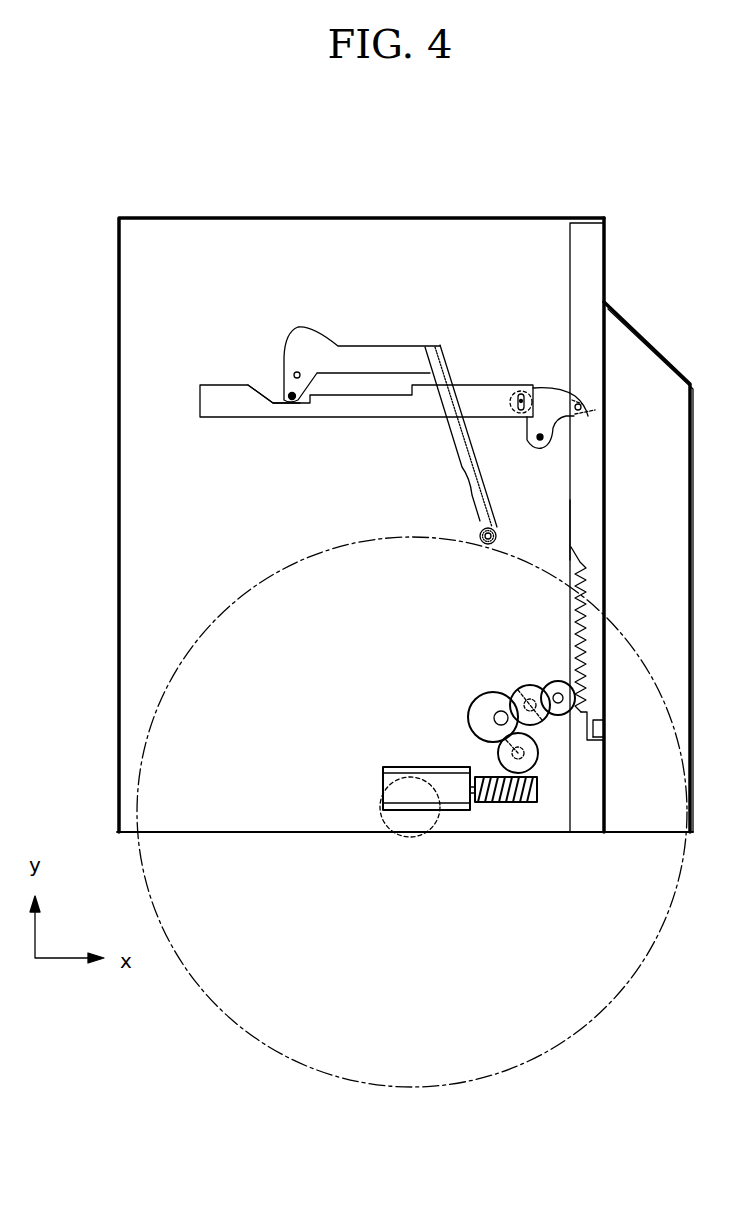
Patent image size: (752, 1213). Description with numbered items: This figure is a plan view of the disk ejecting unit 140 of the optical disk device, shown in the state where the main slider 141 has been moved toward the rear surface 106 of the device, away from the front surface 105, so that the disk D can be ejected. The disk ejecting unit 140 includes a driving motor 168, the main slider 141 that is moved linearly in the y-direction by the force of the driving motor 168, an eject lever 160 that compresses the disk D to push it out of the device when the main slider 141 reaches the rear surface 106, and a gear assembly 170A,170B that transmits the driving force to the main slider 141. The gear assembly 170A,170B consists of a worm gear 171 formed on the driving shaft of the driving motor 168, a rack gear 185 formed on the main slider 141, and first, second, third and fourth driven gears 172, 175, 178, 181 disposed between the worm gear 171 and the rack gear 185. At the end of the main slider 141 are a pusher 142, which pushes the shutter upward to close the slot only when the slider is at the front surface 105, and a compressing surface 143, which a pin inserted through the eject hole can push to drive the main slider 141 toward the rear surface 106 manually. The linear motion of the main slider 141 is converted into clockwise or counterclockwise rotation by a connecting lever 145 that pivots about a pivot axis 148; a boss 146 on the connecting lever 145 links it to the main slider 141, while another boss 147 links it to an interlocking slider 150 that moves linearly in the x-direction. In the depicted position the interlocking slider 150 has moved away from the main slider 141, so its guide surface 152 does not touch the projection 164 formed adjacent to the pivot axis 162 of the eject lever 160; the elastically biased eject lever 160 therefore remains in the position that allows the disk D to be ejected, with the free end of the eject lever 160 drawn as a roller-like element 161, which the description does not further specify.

The front surface 105 is at (292, 833).
The rear surface 106 is at (367, 217).
The disk ejecting unit 140 is at (278, 312).
The main slider 141 is at (570, 526).
The pusher 142 is at (600, 740).
The compressing surface 143 is at (600, 723).
The connecting lever 145 is at (552, 446).
The boss 146 is at (582, 407).
The boss 147 is at (522, 392).
The pivot axis 148 is at (539, 441).
The interlocking slider 150 is at (469, 388).
The guide surface 152 is at (262, 398).
The eject lever 160 is at (462, 461).
The roller 161 is at (478, 545).
The pivot axis 162 is at (294, 373).
The projection 164 is at (292, 400).
The driving motor 168 is at (455, 812).
The gear assembly 170A,170B is at (442, 642).
The worm gear 171 is at (519, 804).
The first driven gear 172 is at (497, 763).
The second driven gear 175 is at (483, 706).
The third driven gear 178 is at (522, 689).
The fourth driven gear 181 is at (556, 685).
The rack gear 185 is at (575, 620).
The disk D is at (421, 1078).